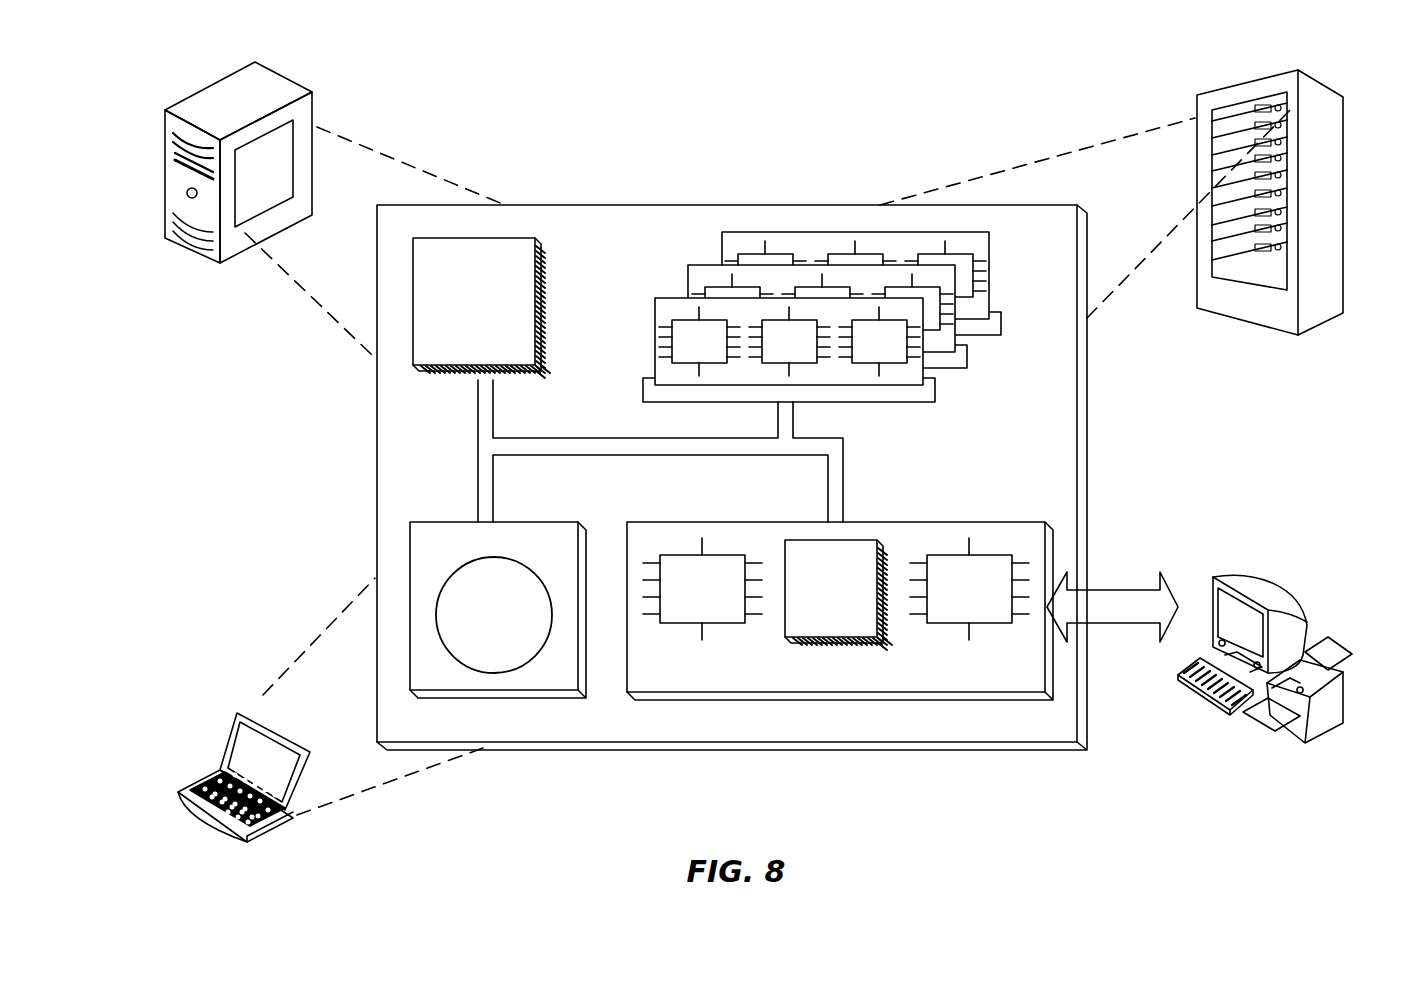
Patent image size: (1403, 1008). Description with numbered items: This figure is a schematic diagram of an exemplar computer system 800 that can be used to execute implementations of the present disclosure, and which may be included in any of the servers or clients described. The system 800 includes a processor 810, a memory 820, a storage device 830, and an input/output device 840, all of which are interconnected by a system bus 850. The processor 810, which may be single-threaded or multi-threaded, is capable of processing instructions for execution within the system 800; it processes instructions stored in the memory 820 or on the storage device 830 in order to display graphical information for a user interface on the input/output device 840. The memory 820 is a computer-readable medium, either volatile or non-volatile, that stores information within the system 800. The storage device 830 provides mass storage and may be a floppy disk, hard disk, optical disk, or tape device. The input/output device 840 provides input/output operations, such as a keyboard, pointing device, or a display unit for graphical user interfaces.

The computer system 800 is at (558, 83).
The processor 810 is at (527, 360).
The memory 820 is at (1002, 369).
The storage device 830 is at (572, 681).
The input/output device 840 is at (1204, 579).
The bus 850 is at (666, 455).